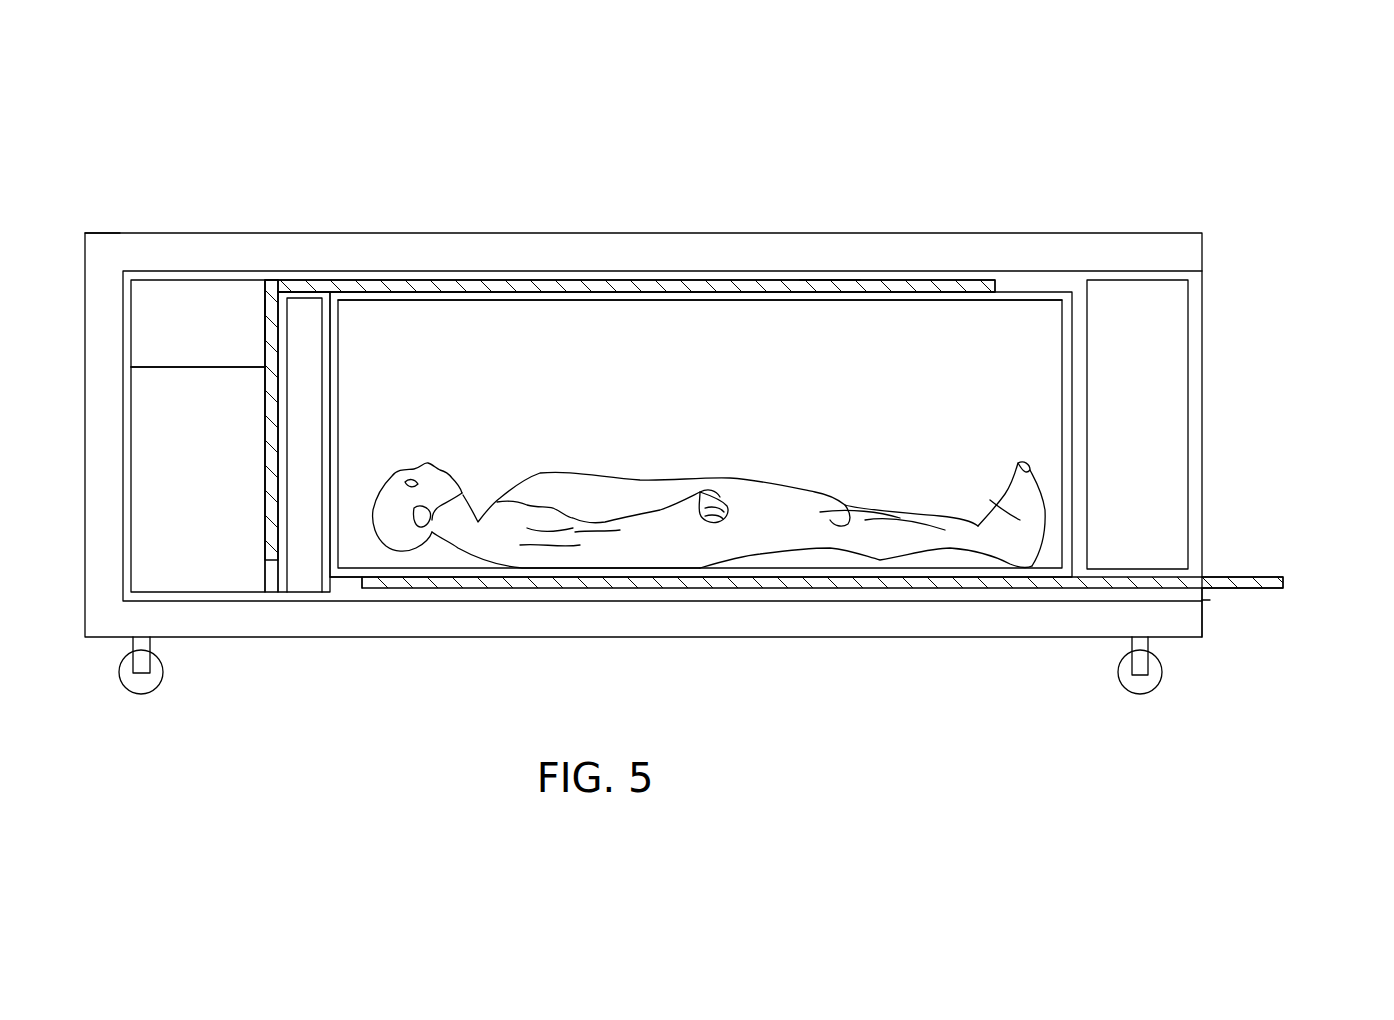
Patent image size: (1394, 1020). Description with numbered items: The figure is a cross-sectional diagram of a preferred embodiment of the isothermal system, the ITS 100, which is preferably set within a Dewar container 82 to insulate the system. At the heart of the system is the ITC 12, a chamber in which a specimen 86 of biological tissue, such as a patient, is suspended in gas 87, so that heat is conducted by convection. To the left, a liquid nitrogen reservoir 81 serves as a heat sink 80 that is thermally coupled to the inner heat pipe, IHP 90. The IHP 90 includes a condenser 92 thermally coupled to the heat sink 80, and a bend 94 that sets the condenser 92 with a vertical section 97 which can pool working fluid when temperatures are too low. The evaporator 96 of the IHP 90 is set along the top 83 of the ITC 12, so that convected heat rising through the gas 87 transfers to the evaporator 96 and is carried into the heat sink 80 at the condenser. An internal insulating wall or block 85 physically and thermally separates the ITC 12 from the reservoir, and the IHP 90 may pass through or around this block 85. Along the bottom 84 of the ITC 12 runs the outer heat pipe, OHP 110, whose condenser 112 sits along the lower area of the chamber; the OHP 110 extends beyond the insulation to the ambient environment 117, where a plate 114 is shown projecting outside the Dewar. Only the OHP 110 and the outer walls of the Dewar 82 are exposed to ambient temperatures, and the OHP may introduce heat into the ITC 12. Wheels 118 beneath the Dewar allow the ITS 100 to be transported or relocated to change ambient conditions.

The ITS 100 is at (131, 143).
The Dewar container 82 is at (205, 247).
The heat sink 80 is at (193, 521).
The Liquid Nitrogen (LN2) reservoir 81 is at (148, 483).
The condenser 92 is at (265, 298).
The vertical section 97 is at (273, 328).
The IHP 90 is at (428, 285).
The evaporator 96 is at (828, 284).
The bend 94 is at (277, 277).
The internal insulating wall or block 85 is at (291, 451).
The ITC 12 is at (885, 322).
The gas 87 is at (470, 374).
The top 83 is at (970, 305).
The specimen 86 is at (623, 485).
The condenser 112 is at (700, 585).
The plate extension 114 is at (1264, 575).
The bottom 84 is at (362, 578).
The OHP 110 is at (1208, 595).
The wheels 118 is at (152, 690).
The ambient environment 117 is at (1357, 366).